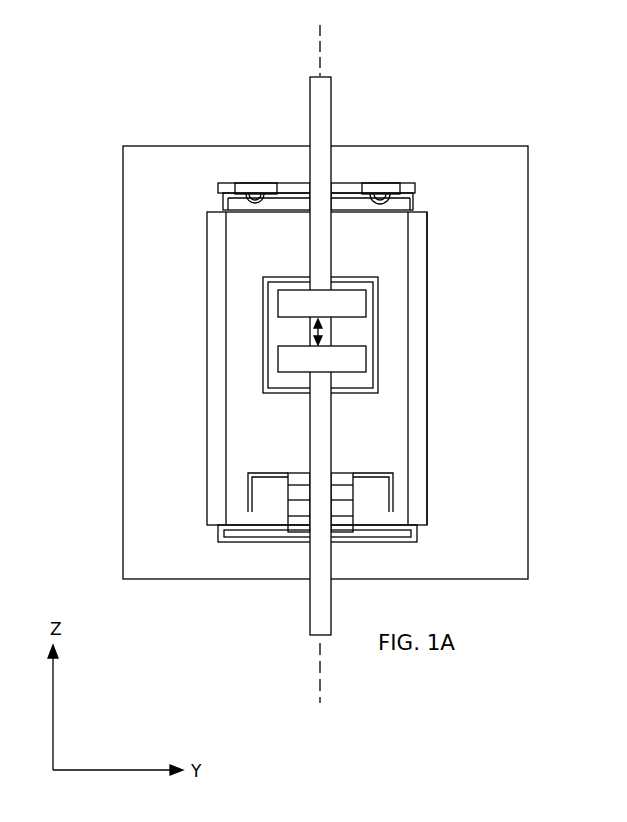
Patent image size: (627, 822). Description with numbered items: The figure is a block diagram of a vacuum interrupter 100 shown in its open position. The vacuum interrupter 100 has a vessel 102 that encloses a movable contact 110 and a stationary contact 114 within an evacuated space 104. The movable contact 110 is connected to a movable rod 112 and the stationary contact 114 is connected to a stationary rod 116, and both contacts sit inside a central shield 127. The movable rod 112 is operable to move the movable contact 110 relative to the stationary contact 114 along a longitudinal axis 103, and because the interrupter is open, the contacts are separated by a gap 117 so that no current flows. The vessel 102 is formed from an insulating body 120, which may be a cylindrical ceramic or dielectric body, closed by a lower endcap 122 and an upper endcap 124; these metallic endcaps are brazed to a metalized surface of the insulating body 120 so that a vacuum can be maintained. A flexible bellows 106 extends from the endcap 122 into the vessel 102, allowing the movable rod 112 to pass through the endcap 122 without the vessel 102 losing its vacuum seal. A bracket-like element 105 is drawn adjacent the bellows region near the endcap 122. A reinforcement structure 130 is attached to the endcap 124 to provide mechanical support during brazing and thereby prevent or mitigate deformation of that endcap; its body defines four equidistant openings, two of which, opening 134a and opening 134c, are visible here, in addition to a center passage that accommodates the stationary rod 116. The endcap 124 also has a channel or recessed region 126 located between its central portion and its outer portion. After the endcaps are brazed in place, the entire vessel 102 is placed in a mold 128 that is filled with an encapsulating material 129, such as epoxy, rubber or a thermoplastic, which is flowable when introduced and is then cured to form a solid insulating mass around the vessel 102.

The vacuum interrupter 100 is at (143, 108).
The vessel 102 is at (193, 247).
The longitudinal axis 103 is at (320, 48).
The evacuated space 104 is at (282, 424).
The bracket 105 is at (278, 473).
The flexible bellows 106 is at (292, 510).
The movable contact 110 is at (322, 359).
The movable rod 112 is at (333, 446).
The stationary contact 114 is at (322, 303).
The stationary rod 116 is at (332, 250).
The gap 117 is at (333, 332).
The insulating body 120 is at (424, 367).
The endcap 122 is at (378, 541).
The endcap 124 is at (294, 197).
The recessed region 126 is at (245, 201).
The central shield 127 is at (263, 302).
The mold 128 is at (528, 422).
The encapsulating material 129 is at (160, 174).
The reinforcement structure 130 is at (415, 188).
The opening 134a is at (364, 188).
The opening 134c is at (255, 190).